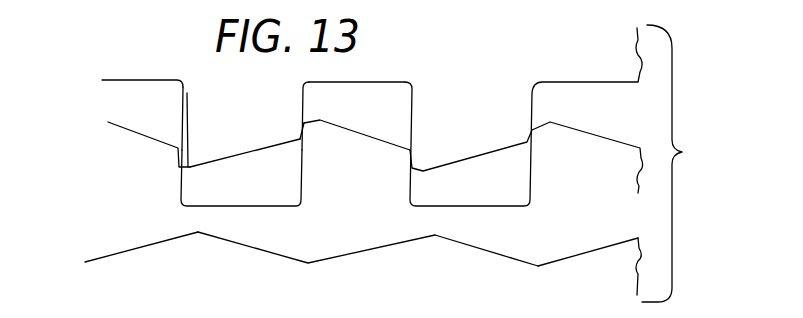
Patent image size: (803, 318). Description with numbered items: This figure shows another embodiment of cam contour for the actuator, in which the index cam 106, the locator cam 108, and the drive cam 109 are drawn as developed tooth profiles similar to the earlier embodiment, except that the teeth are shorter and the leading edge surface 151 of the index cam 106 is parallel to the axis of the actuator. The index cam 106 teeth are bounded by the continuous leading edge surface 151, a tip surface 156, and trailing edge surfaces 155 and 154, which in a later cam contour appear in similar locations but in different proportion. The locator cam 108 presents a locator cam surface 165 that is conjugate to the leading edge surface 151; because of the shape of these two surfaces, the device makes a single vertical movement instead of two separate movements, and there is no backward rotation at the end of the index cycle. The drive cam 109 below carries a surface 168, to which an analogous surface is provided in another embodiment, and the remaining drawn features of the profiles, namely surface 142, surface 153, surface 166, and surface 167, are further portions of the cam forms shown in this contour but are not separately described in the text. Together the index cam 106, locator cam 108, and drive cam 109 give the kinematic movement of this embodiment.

The index cam 106 is at (419, 117).
The locator cam 108 is at (422, 130).
The drive cam 109 is at (416, 254).
The corrugation flank 142 is at (517, 265).
The leading edge surface 151 is at (185, 105).
The tab 153 is at (198, 125).
The trailing edge surface 154 is at (305, 102).
The trailing edge surface 155 is at (303, 122).
The tip surface 156 is at (250, 148).
The locator cam surface 165 is at (179, 178).
The inclined web 166 is at (375, 143).
The corrugation crest 167 is at (343, 253).
The surface 168 is at (477, 245).